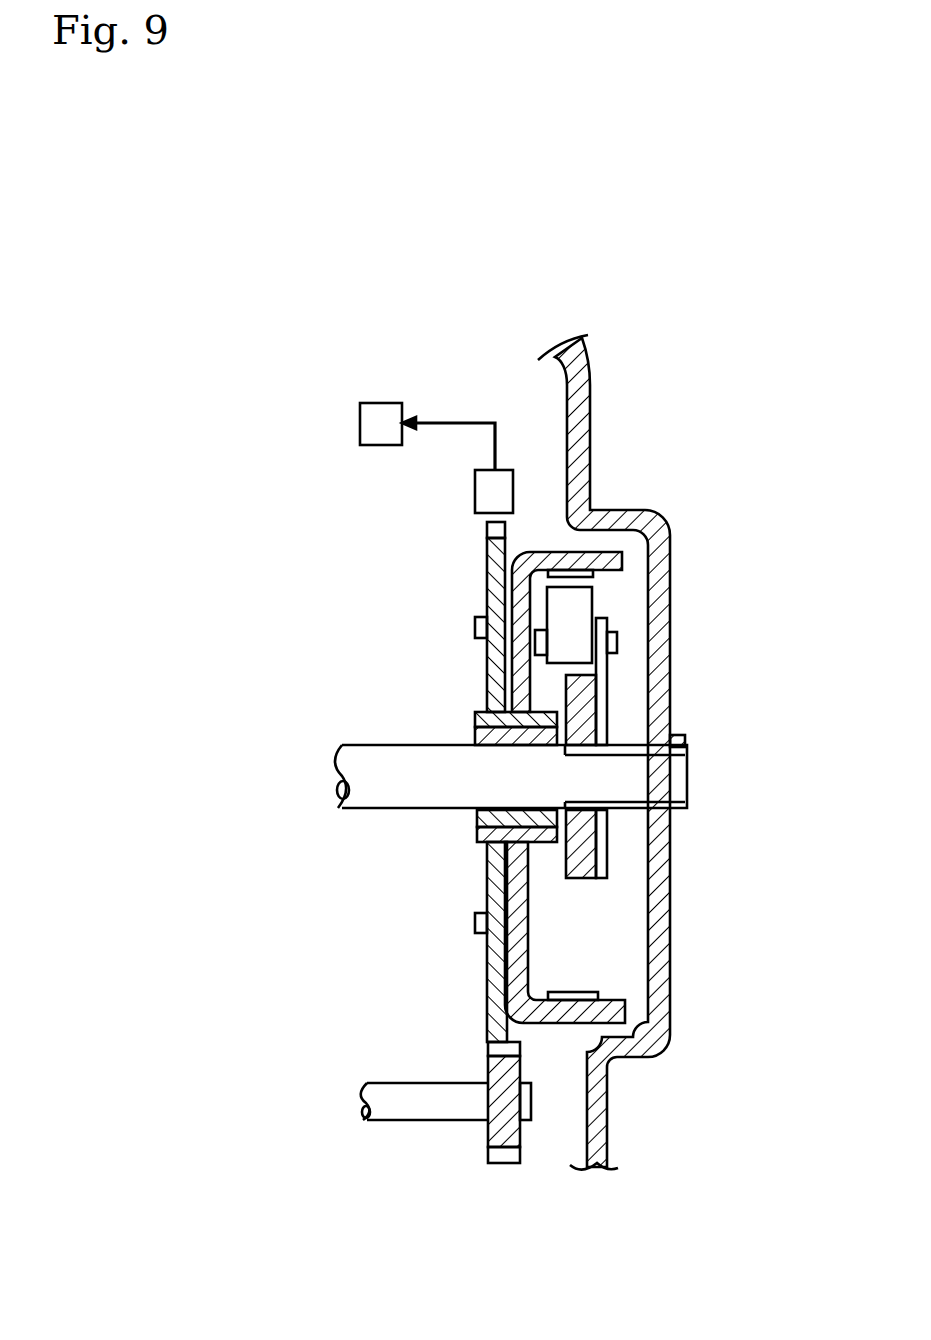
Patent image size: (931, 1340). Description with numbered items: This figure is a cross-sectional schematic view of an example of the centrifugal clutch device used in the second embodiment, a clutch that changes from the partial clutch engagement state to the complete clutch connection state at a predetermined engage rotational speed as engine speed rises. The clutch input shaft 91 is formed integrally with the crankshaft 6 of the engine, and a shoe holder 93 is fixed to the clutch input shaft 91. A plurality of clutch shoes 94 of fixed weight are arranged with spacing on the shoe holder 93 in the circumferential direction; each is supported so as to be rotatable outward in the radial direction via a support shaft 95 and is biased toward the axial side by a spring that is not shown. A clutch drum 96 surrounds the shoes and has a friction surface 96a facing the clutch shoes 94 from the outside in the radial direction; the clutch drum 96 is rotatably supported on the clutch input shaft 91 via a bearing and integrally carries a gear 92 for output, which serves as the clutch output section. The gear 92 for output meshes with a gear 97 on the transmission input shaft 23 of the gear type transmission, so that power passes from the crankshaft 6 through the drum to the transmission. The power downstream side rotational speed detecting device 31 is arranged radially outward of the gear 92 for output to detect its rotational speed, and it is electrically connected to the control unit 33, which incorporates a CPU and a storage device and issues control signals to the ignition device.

The crankshaft 6 is at (372, 780).
The transmission input shaft 23 is at (398, 1112).
The power downstream side rotational speed detecting device 31 is at (482, 491).
The control unit 33 is at (373, 425).
The clutch input shaft 91 is at (667, 781).
The gear for output 92 is at (497, 993).
The shoe holder 93 is at (607, 707).
The clutch shoe 94 is at (577, 607).
The support shaft 95 is at (617, 640).
The clutch drum 96 is at (637, 515).
The friction surface 96a is at (552, 557).
The gear 97 is at (498, 1160).